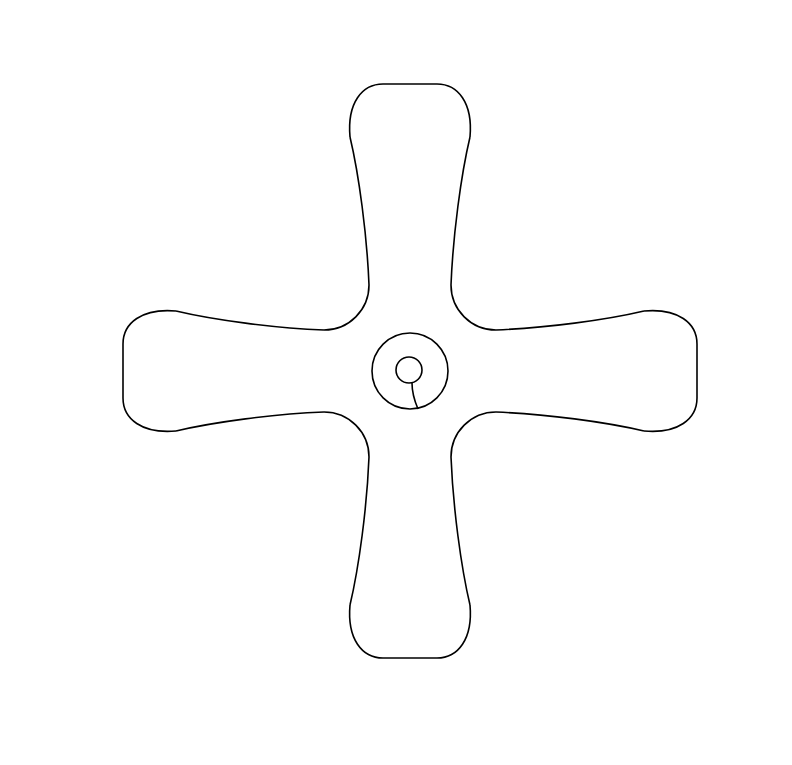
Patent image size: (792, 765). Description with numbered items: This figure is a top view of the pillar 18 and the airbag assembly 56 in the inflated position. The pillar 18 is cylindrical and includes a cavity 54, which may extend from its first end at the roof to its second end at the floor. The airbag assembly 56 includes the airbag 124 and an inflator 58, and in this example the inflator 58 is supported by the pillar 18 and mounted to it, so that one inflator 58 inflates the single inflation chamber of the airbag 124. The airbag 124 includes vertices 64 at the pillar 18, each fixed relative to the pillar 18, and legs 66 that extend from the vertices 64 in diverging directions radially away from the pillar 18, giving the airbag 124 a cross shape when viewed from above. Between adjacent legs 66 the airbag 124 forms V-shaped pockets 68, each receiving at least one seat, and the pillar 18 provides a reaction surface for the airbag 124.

The pillar 18 is at (432, 335).
The cavity 54 is at (435, 366).
The airbag assembly 56 is at (605, 177).
The inflator 58 is at (410, 372).
The vertex 64 is at (332, 253).
The legs 66 is at (437, 85).
The pocket 68 is at (232, 252).
The airbag 124 is at (470, 163).